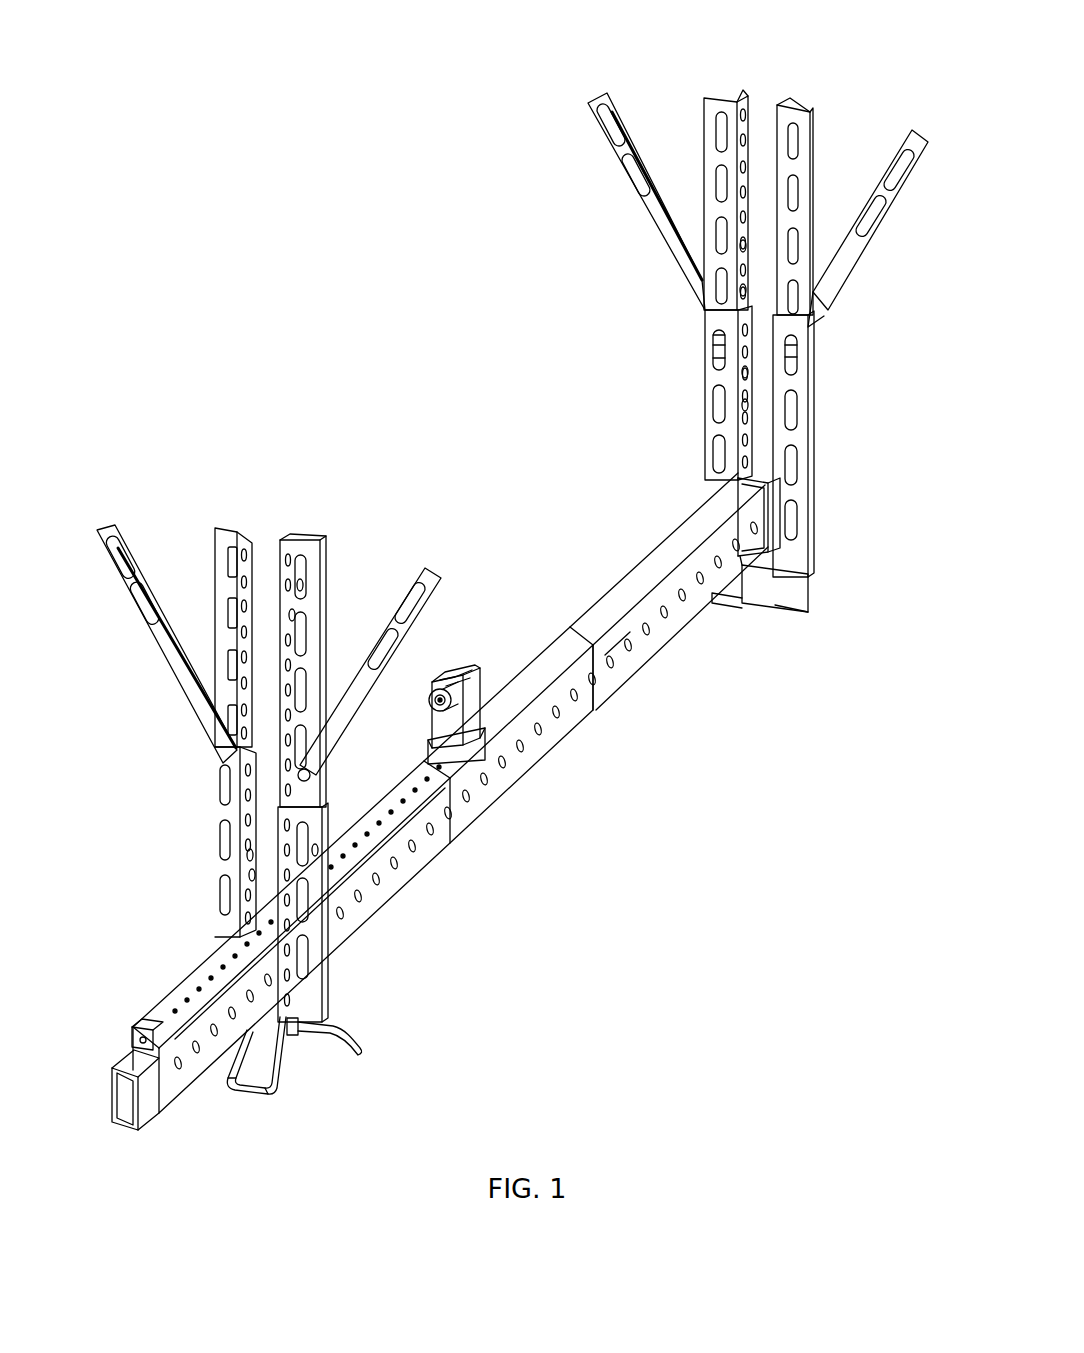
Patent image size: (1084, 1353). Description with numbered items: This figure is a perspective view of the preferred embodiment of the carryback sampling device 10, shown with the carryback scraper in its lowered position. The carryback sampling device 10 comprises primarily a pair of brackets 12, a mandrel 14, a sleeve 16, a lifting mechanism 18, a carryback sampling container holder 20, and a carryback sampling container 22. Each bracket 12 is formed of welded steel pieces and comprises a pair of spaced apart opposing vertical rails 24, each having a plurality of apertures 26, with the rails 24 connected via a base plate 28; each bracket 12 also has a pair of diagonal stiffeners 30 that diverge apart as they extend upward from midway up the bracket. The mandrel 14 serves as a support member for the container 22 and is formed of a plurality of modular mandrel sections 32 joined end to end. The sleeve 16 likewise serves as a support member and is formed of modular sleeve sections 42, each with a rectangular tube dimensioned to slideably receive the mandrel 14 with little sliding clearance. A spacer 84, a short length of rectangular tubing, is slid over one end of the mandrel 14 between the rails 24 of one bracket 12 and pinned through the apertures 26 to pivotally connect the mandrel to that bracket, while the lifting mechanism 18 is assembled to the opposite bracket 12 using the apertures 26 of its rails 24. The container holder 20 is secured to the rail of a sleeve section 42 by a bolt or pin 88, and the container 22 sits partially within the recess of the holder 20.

The carryback sampling device 10 is at (382, 270).
The bracket 12 is at (706, 108).
The mandrel 14 is at (680, 622).
The sleeve 16 is at (490, 800).
The lifting mechanism 18 is at (282, 1098).
The carryback sampling container holder 20 is at (470, 708).
The carryback sampling container 22 is at (448, 683).
The vertical rail 24 is at (744, 100).
The aperture 26 is at (742, 290).
The base plate 28 is at (768, 600).
The diagonal stiffener 30 is at (616, 150).
The modular mandrel section 32 is at (627, 656).
The modular sleeve section 42 is at (545, 732).
The spacer 84 is at (760, 475).
The bolt or pin 88 is at (490, 752).